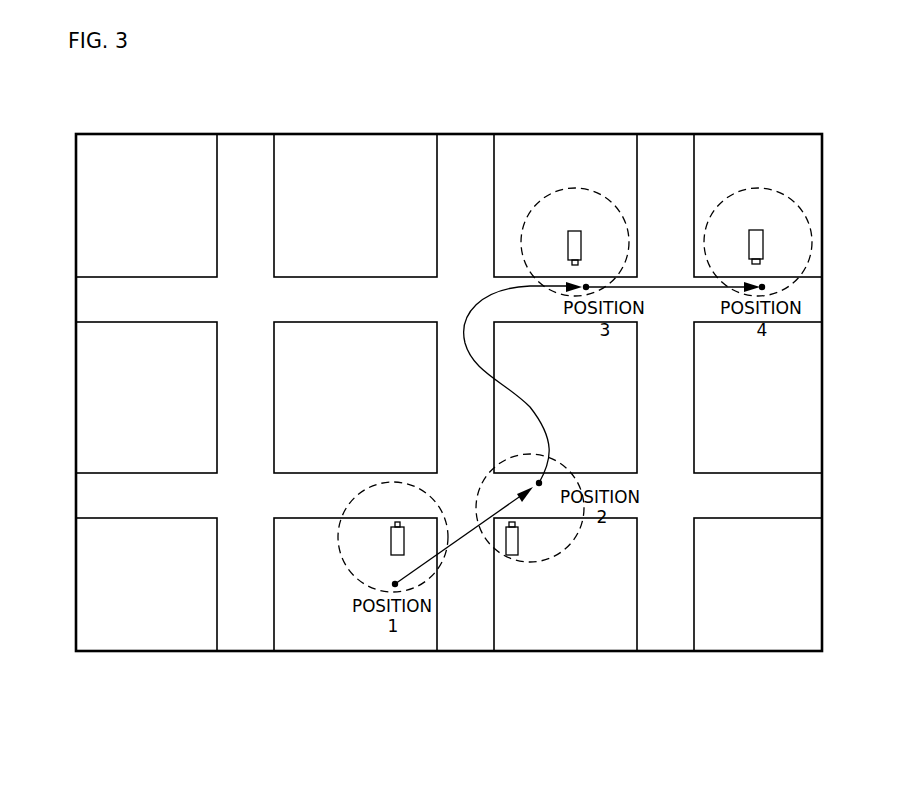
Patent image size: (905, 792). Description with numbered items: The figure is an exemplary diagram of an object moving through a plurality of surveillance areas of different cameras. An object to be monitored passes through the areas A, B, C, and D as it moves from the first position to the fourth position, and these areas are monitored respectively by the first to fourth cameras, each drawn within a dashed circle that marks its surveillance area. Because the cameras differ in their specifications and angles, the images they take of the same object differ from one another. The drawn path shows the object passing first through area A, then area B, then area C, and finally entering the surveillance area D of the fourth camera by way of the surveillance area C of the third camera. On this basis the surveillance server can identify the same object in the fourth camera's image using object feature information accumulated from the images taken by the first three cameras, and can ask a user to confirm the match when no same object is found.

The surveillance area of first camera A is at (353, 577).
The surveillance area of second camera B is at (529, 562).
The surveillance area of third camera C is at (575, 188).
The surveillance area of fourth camera D is at (759, 188).